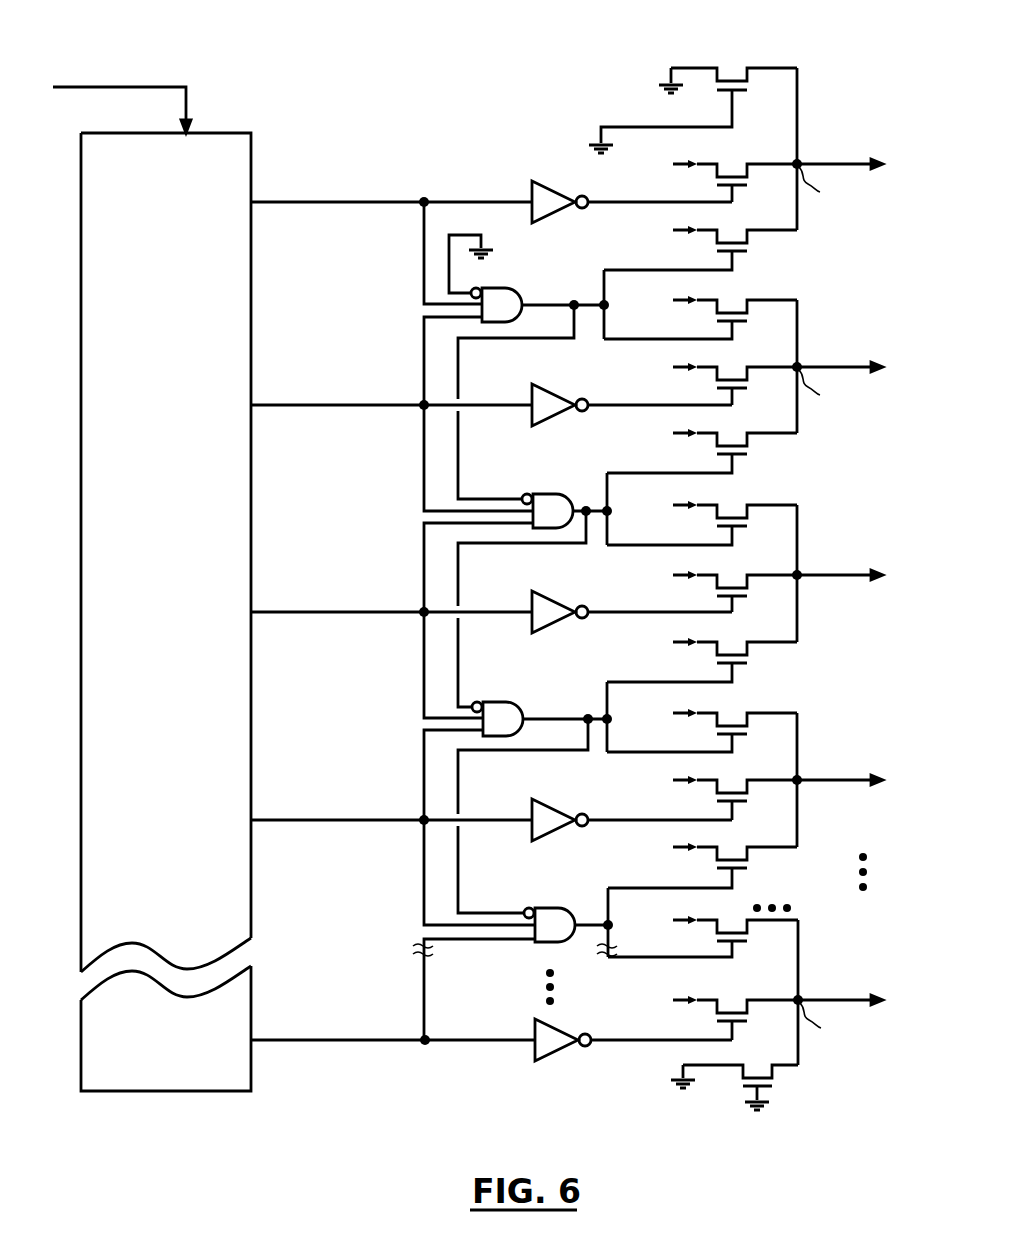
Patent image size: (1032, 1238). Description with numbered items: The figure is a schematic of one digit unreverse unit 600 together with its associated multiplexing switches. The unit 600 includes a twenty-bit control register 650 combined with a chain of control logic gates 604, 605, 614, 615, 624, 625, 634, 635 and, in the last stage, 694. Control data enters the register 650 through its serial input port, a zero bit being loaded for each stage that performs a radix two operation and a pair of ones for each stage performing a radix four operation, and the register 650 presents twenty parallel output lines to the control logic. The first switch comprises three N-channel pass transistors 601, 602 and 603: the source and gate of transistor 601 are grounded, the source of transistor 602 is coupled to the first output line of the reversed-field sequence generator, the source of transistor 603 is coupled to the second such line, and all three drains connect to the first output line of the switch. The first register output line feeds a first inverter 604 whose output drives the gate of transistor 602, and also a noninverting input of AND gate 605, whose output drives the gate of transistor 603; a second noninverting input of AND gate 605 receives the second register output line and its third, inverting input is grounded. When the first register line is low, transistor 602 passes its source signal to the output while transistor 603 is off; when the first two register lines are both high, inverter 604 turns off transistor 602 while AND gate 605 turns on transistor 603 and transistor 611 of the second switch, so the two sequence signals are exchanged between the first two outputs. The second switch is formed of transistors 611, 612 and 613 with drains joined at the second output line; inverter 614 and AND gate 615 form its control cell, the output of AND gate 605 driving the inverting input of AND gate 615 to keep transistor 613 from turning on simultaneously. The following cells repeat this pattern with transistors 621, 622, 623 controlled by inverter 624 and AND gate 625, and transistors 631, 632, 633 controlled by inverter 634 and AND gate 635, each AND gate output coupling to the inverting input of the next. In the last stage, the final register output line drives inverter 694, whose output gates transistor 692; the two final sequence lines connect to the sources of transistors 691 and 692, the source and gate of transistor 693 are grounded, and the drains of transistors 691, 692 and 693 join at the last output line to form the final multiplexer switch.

The digit unreverse unit 600 is at (454, 57).
The control register 650 is at (186, 548).
The pass transistor 601 is at (693, 110).
The pass transistor 602 is at (747, 191).
The pass transistor 603 is at (700, 250).
The first inverter 604 is at (632, 216).
The AND gate 605 is at (526, 278).
The transistor 611 is at (700, 325).
The transistor 612 is at (747, 392).
The transistor 613 is at (702, 460).
The inverter 614 is at (632, 390).
The AND gate 615 is at (564, 491).
The pass transistor 621 is at (702, 533).
The pass transistor 622 is at (747, 600).
The pass transistor 623 is at (702, 671).
The inverter 624 is at (632, 596).
The AND gate 625 is at (539, 703).
The pass transistor 631 is at (702, 739).
The pass transistor 632 is at (747, 806).
The pass transistor 633 is at (702, 874).
The inverter 634 is at (632, 804).
The AND gate 635 is at (566, 906).
The transistor 691 is at (703, 946).
The transistor 692 is at (747, 1027).
The transistor 693 is at (751, 1087).
The inverter 694 is at (633, 1054).